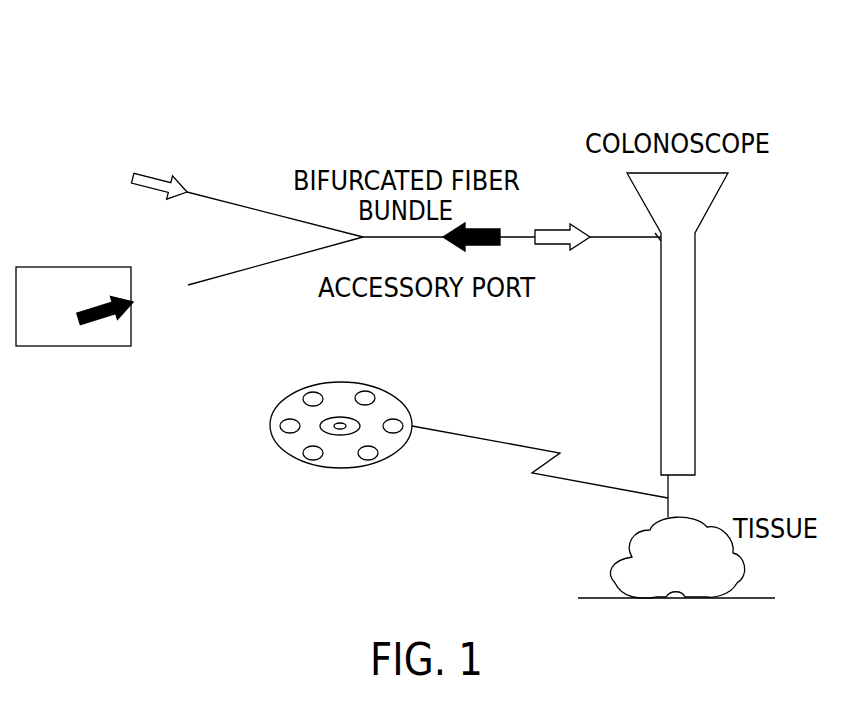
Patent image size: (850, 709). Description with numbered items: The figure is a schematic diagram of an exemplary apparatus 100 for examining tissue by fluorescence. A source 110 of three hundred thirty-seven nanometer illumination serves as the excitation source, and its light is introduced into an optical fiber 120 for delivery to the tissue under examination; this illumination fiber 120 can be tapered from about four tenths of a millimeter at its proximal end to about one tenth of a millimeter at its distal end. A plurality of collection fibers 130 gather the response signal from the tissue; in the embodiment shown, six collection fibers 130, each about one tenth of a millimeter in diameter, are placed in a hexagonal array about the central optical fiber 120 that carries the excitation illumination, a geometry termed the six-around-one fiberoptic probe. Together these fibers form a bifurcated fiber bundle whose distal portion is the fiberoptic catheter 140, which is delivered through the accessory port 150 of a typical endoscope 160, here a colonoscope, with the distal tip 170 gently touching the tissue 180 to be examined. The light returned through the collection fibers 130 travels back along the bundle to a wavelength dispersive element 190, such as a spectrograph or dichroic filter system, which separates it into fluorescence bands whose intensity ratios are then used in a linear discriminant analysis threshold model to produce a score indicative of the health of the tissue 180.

The apparatus 100 is at (548, 54).
The source of 337 nm illumination 110 is at (127, 168).
The optical fiber 120 is at (620, 232).
The collection fibers 130 is at (318, 463).
The fiberoptic catheter 140 is at (340, 421).
The accessory port 150 is at (654, 242).
The endoscope 160 is at (695, 323).
The distal tip 170 is at (695, 477).
The tissue 180 is at (742, 557).
The wavelength dispersive element 190 is at (120, 346).